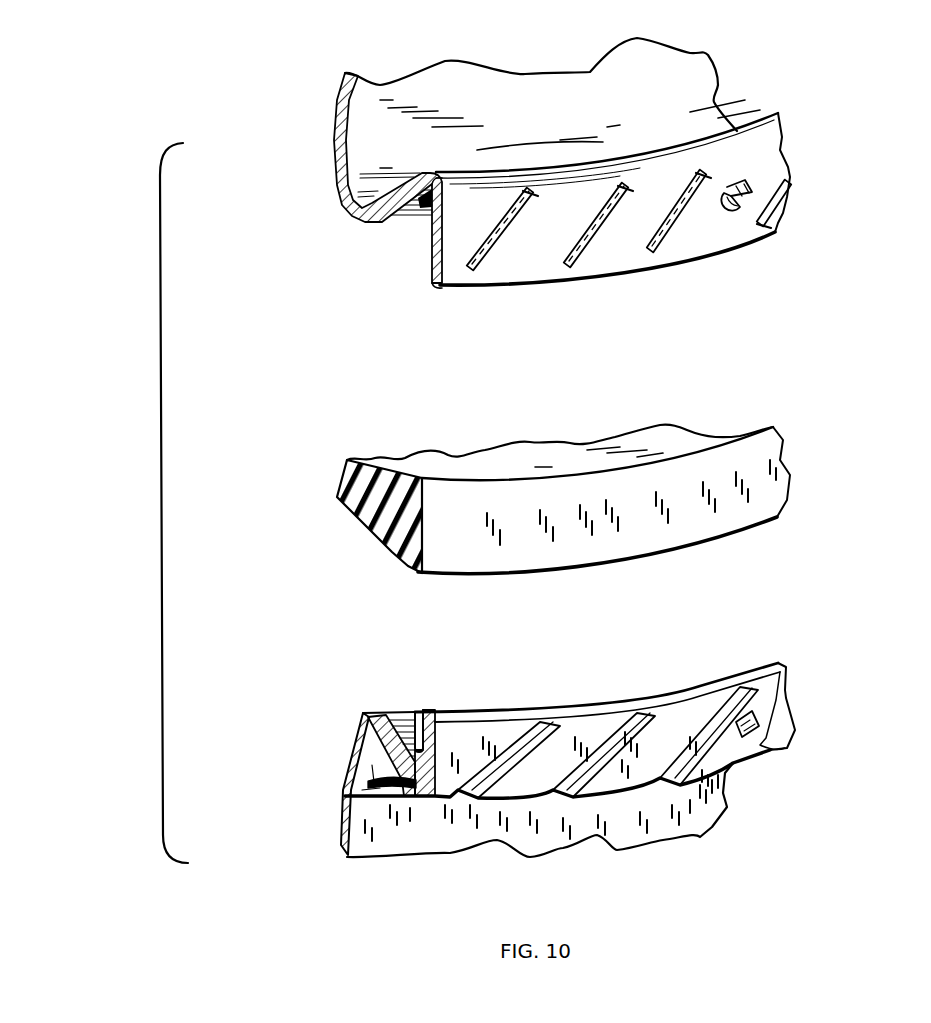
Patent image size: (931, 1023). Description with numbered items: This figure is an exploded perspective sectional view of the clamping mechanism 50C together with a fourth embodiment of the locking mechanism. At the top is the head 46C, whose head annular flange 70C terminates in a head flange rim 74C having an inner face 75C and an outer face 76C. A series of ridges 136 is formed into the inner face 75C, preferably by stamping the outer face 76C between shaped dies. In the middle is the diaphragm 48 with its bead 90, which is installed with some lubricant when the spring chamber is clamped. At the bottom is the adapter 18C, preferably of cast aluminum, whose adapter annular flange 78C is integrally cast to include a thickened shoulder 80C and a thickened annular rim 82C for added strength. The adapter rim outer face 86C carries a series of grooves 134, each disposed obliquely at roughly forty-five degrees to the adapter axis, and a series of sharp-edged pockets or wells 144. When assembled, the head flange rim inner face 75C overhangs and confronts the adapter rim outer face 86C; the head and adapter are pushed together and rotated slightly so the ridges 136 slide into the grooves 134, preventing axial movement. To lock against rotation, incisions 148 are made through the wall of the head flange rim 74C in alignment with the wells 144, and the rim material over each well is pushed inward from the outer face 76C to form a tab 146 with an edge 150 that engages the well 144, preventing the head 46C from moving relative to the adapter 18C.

The clamping mechanism 50C is at (160, 372).
The head 46C is at (738, 71).
The head annular flange 70C is at (341, 237).
The head flange rim 74C is at (540, 267).
The inner face of head flange rim 75C is at (433, 263).
The head flange rim outer face 76C is at (445, 273).
The ridges 136 is at (672, 225).
The tab 146 is at (735, 205).
The incisions 148 is at (748, 182).
The edge 150 is at (751, 190).
The diaphragm 48 is at (420, 466).
The bead 90 is at (443, 565).
The adapter annular flange 78C is at (358, 699).
The adapter 18C is at (321, 815).
The shoulder 80C is at (350, 837).
The annular rim 82C is at (433, 712).
The adapter rim outer face 86C is at (767, 702).
The grooves 134 is at (702, 740).
The wells 144 is at (748, 745).